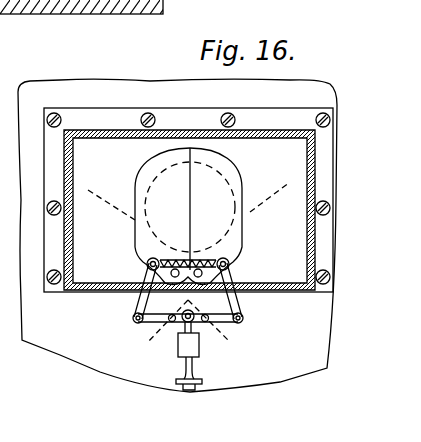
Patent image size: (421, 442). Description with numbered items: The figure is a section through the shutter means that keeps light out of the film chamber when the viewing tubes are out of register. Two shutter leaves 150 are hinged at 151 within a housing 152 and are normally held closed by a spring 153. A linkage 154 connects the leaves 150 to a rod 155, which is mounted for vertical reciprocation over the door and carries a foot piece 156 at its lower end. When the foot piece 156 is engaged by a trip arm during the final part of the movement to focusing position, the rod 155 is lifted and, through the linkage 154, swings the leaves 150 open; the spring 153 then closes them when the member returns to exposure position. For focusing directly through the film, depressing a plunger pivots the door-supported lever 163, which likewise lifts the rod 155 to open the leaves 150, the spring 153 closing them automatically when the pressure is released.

The shutter leaves 150 is at (208, 176).
The hinge 151 is at (148, 276).
The housing 152 is at (308, 239).
The spring 153 is at (168, 243).
The linkage 154 is at (140, 298).
The rod 155 is at (192, 366).
The foot piece 156 is at (196, 385).
The lever 163 is at (188, 389).